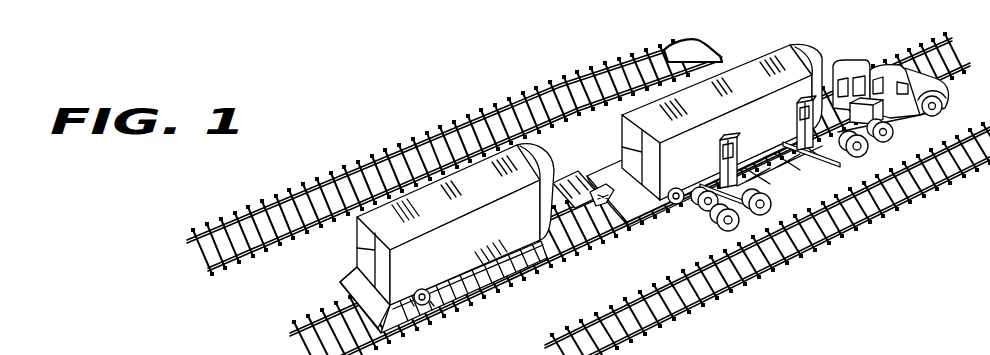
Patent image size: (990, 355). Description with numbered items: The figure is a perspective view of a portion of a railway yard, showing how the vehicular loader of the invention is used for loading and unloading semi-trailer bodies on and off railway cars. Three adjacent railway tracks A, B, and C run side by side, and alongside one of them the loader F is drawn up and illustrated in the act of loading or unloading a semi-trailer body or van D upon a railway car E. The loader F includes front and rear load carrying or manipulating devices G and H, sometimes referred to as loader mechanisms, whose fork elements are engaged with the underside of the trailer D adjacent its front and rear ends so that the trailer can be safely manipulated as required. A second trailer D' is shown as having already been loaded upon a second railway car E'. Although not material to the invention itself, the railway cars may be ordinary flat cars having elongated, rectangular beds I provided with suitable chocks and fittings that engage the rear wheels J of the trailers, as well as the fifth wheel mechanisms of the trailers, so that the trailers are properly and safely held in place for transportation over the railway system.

The railway track A is at (265, 207).
The railway track B is at (305, 320).
The railway track C is at (745, 292).
The semi-trailer body or van D is at (722, 122).
The second trailer D' is at (455, 218).
The railway car E is at (704, 191).
The second railway car E' is at (470, 252).
The loader F is at (712, 227).
The front load carrying or manipulating device G is at (802, 100).
The rear load carrying or manipulating device H is at (727, 136).
The elongated rectangular bed I is at (345, 278).
The rear wheels J is at (427, 306).